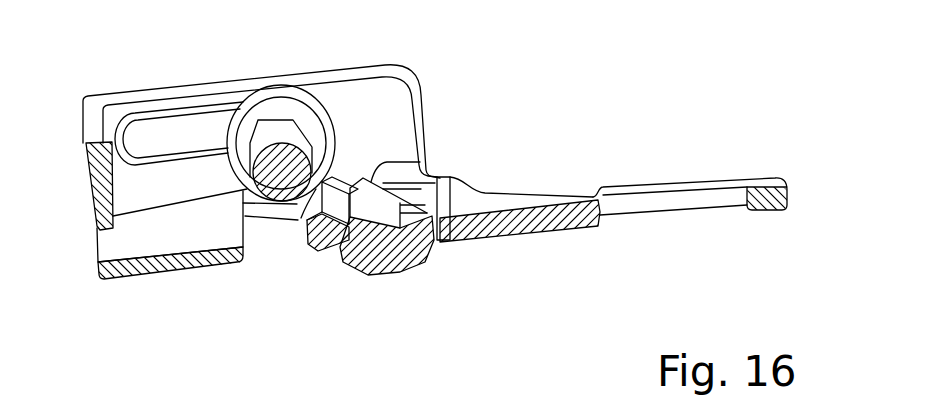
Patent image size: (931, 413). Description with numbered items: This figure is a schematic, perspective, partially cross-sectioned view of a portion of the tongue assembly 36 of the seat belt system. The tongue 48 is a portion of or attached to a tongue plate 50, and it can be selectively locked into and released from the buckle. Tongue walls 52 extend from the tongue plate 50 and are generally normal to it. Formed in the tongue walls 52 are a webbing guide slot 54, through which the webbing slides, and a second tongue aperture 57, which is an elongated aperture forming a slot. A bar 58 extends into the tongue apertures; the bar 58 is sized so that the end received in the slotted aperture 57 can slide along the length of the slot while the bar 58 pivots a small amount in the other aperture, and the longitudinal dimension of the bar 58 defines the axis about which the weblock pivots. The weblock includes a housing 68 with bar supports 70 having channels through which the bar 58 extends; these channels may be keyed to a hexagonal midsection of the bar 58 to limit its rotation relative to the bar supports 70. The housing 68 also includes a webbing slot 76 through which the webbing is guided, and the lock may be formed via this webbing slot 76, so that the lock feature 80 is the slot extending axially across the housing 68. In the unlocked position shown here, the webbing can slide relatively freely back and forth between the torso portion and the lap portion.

The tongue assembly 36 is at (525, 98).
The tongue 48 is at (760, 172).
The tongue plate 50 is at (160, 278).
The tongue walls 52 is at (400, 66).
The webbing guide slot 54 is at (97, 251).
The second tongue aperture 57 is at (147, 110).
The bar 58 is at (298, 218).
The housing 68 is at (377, 168).
The bar supports 70 is at (313, 88).
The webbing slot 76 is at (407, 261).
The lock feature 80 is at (450, 213).